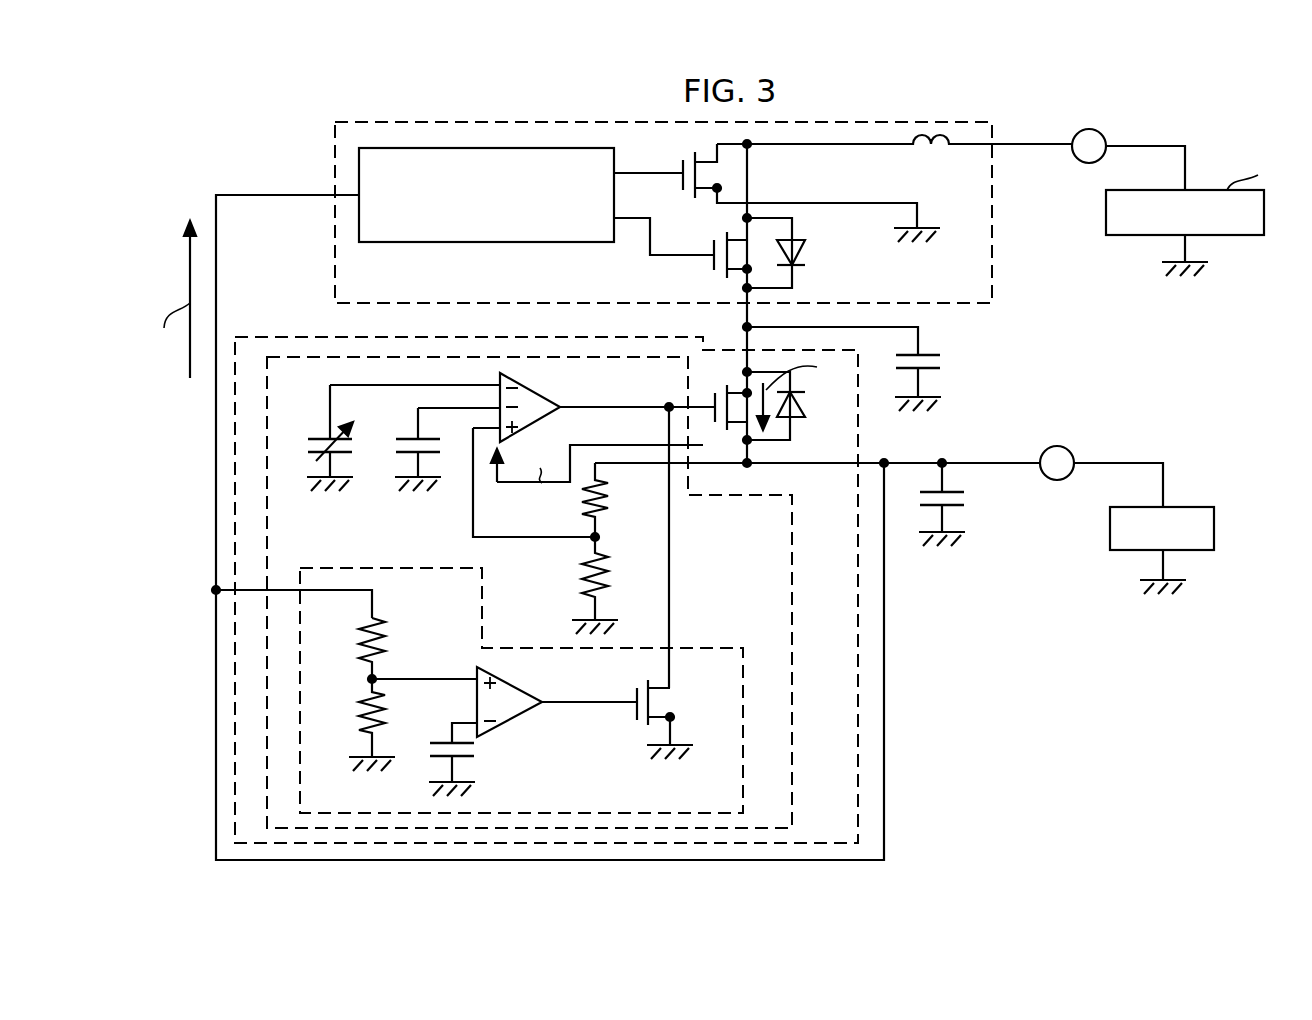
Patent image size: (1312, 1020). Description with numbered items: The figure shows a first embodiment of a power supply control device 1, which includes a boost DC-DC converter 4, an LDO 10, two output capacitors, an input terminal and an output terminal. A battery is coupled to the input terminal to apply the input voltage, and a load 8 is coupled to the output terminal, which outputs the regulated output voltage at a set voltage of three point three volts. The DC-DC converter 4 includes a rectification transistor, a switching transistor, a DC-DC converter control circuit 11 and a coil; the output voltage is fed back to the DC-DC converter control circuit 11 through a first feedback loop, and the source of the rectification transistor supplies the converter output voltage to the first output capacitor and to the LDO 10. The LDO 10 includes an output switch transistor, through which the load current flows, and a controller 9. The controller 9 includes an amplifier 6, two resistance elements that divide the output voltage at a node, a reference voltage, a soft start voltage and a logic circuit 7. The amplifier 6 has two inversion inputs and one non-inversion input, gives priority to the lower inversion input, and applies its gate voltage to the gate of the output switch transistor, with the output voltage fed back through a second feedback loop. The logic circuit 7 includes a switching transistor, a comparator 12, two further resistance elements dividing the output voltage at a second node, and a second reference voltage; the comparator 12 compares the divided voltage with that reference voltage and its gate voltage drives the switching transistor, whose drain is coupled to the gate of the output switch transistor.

The power supply control device 1 is at (1222, 108).
The boost DC-DC converter 4 is at (993, 243).
The amplifier 6 is at (523, 383).
The logic circuit 7 is at (743, 736).
The load 8 is at (1214, 519).
The controller 9 is at (793, 586).
The LDO 10 is at (257, 335).
The DC-DC converter control circuit 11 is at (468, 242).
The comparator 12 is at (522, 718).